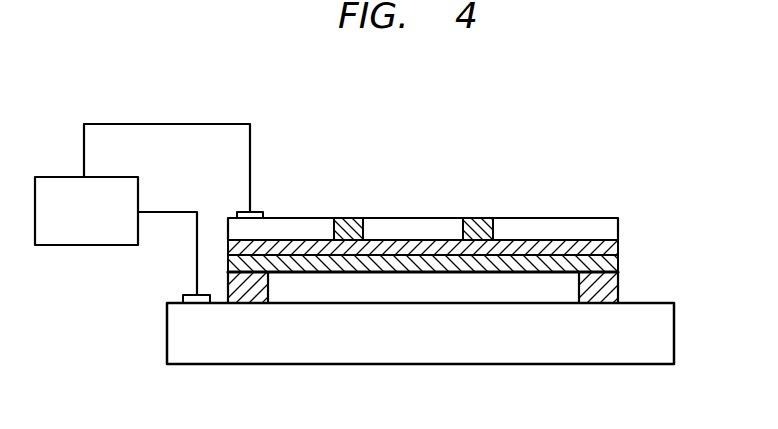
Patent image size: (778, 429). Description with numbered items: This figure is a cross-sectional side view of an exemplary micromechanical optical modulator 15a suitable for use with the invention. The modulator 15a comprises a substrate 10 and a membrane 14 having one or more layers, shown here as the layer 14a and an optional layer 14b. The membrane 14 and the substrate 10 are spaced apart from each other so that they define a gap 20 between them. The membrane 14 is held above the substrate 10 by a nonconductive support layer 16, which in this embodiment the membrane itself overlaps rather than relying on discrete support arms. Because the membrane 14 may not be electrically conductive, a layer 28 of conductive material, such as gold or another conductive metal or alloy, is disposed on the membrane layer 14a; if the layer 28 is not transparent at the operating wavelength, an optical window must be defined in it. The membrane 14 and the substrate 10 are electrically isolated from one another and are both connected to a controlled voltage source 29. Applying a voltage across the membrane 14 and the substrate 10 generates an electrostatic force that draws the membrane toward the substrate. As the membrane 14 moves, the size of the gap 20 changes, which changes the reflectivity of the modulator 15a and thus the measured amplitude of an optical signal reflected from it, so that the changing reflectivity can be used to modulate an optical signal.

The modulator 15a is at (508, 118).
The layer of conductive material 28 is at (580, 227).
The membrane 14 is at (697, 220).
The layer 14a is at (617, 249).
The optional layer 14b is at (617, 262).
The nonconductive support layer 16 is at (605, 297).
The gap 20 is at (397, 288).
The substrate 10 is at (433, 353).
The controlled voltage source 29 is at (78, 246).